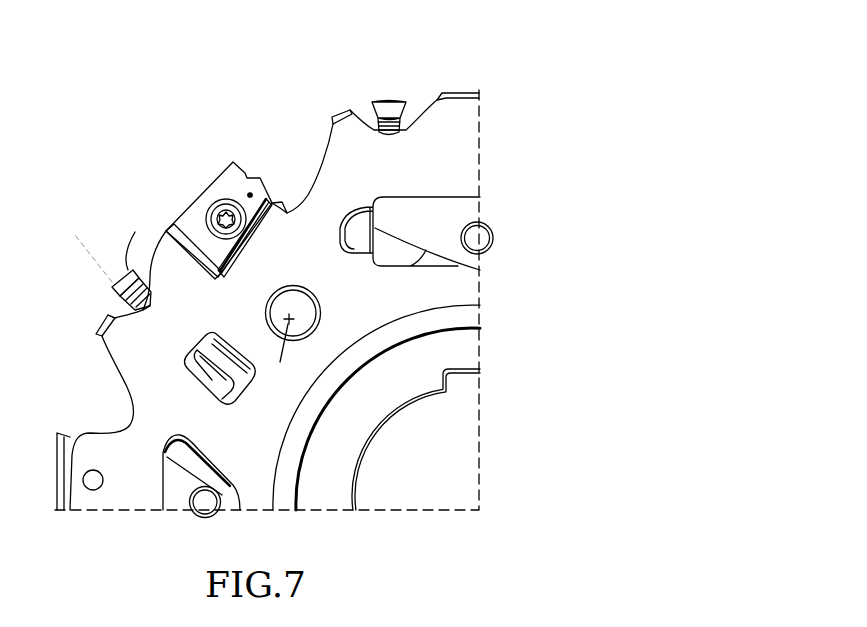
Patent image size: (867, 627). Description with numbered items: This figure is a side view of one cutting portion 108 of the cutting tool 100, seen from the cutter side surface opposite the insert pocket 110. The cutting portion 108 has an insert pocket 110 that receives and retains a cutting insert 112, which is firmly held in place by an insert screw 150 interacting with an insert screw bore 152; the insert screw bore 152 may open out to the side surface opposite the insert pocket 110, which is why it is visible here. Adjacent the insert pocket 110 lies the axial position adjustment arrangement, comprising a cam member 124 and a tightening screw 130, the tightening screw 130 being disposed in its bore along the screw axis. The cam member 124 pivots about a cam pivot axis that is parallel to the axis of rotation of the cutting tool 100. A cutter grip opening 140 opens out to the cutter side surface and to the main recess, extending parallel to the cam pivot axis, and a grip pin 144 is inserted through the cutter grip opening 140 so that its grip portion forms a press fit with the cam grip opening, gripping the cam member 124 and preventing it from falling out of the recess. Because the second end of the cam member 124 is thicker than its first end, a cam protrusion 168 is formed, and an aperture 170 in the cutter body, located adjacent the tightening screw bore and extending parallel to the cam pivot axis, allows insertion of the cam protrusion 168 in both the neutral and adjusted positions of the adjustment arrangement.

The cutting tool 100 is at (264, 279).
The cutting portion 108 is at (257, 308).
The insert pocket 110 is at (257, 176).
The cutting insert 112 is at (228, 183).
The cam member 124 is at (215, 340).
The tightening screw 130 is at (113, 255).
The cutter grip opening 140 is at (373, 371).
The grip pin 144 is at (301, 305).
The insert screw 150 is at (224, 214).
The insert screw bore 152 is at (93, 482).
The cam protrusion 168 is at (207, 361).
The aperture 170 is at (228, 390).